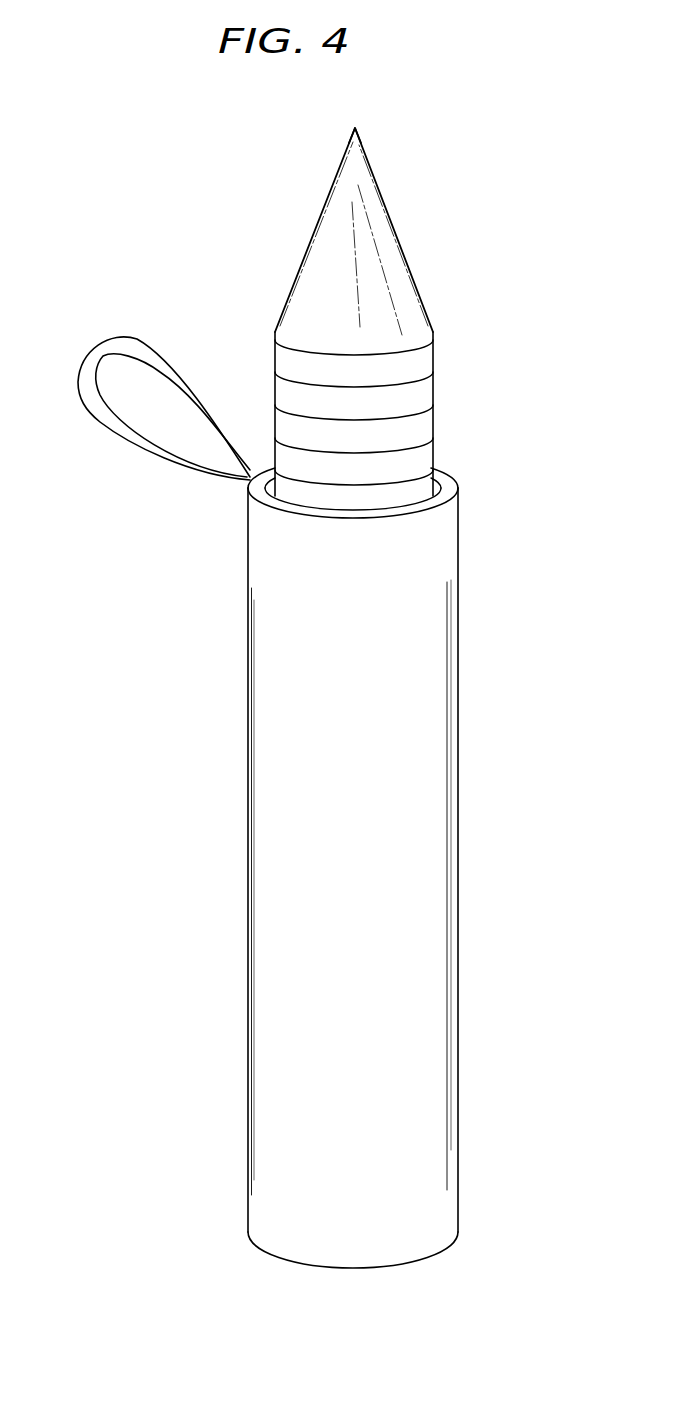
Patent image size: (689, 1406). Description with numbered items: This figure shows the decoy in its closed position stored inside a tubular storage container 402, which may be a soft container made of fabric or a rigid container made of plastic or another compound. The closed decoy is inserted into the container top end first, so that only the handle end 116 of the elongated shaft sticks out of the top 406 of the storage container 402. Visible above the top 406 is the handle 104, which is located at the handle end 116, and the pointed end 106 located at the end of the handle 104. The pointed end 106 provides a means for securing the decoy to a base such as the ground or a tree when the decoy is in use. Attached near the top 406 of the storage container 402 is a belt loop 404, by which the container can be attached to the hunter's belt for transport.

The handle end 116 is at (357, 129).
The pointed end 106 is at (396, 276).
The handle 104 is at (422, 363).
The top of storage container 406 is at (449, 478).
The tubular storage container 402 is at (413, 690).
The belt loop 404 is at (130, 438).